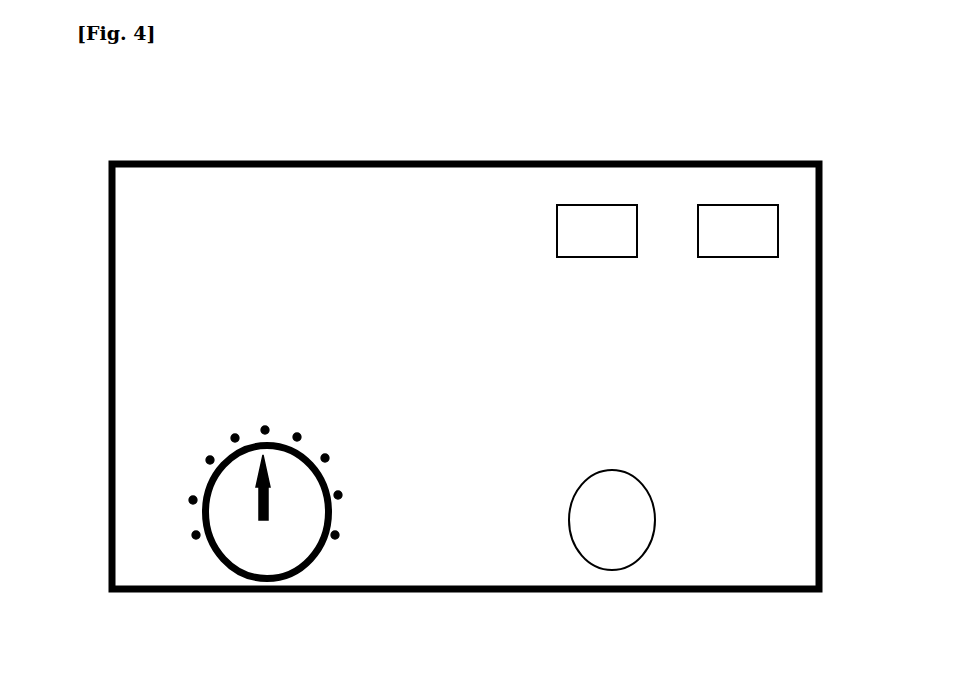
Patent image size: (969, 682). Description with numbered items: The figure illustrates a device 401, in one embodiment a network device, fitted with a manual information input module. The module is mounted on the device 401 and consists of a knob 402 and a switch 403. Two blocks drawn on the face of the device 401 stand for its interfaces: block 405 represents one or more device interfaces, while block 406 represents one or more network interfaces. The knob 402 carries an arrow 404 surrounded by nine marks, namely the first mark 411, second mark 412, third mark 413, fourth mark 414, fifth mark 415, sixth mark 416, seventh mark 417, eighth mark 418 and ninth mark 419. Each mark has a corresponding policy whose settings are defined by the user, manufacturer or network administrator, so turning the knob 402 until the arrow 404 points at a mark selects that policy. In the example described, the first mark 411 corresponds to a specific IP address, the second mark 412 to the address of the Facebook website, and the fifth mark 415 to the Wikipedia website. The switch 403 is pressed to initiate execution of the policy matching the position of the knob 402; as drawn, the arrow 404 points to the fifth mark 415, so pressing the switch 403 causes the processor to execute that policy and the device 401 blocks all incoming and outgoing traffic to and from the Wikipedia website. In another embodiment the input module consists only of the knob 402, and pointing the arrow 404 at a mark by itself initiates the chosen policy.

The device 401 is at (488, 168).
The knob 402 is at (232, 565).
The switch 403 is at (628, 473).
The arrow 404 is at (272, 500).
The device interface 405 is at (745, 257).
The network interface 406 is at (608, 257).
The mark '1' 411 is at (187, 537).
The mark '2' 412 is at (185, 467).
The mark '3' 413 is at (198, 447).
The mark '4' 414 is at (230, 418).
The mark '5' 415 is at (268, 407).
The mark '6' 416 is at (308, 402).
The mark '7' 417 is at (340, 452).
The mark '8' 418 is at (365, 500).
The mark '9' 419 is at (355, 553).